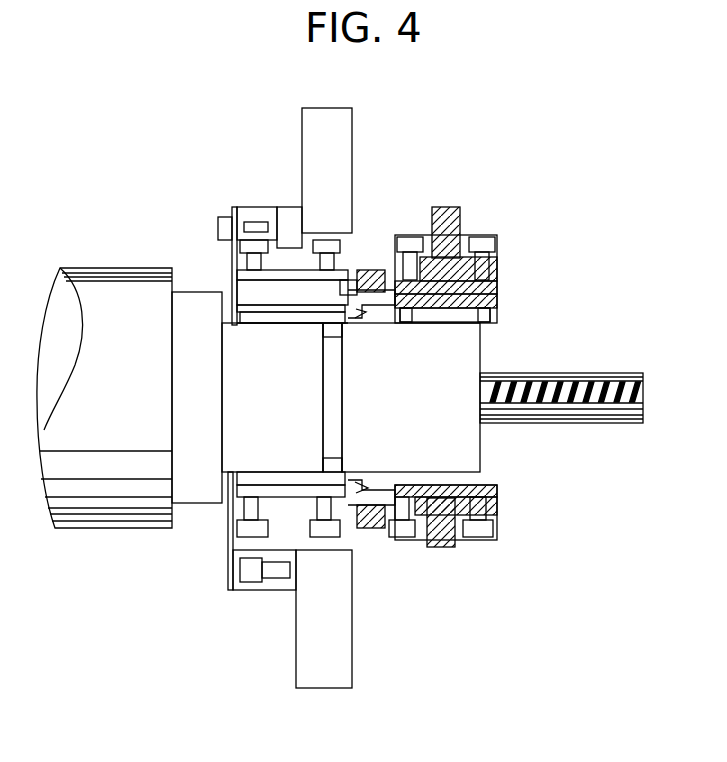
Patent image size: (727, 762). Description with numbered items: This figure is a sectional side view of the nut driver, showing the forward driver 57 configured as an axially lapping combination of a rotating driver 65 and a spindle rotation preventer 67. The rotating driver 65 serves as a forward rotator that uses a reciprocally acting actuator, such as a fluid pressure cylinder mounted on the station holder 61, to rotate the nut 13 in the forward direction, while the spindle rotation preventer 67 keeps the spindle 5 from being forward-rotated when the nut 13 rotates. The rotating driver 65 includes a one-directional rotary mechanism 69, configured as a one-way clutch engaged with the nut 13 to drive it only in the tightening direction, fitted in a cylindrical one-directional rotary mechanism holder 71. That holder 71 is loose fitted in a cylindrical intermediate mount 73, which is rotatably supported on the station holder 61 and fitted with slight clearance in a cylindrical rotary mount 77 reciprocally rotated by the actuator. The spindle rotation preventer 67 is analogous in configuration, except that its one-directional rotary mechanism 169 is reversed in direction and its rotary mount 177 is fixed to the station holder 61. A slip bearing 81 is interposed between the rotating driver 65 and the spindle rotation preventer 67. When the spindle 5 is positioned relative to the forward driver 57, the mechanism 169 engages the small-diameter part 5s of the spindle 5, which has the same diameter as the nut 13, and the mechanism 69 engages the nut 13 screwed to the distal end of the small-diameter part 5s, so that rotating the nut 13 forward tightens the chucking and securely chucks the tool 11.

The spindle 5 is at (125, 268).
The small-diameter part of the spindle 5s is at (286, 434).
The tool 11 is at (605, 400).
The nut 13 is at (426, 434).
The forward driver 57 is at (548, 516).
The station holder 61 is at (302, 140).
The rotating driver 65 is at (526, 200).
The spindle rotation preventer 67 is at (186, 181).
The one-directional rotary mechanism 69 is at (462, 320).
The one-directional rotary mechanism holder 71 is at (497, 300).
The intermediate mount 73 is at (497, 283).
The rotary mount 77 is at (460, 207).
The slip bearing 81 is at (372, 268).
The one-directional rotary mechanism 169 is at (310, 322).
The rotary mount 177 is at (262, 207).